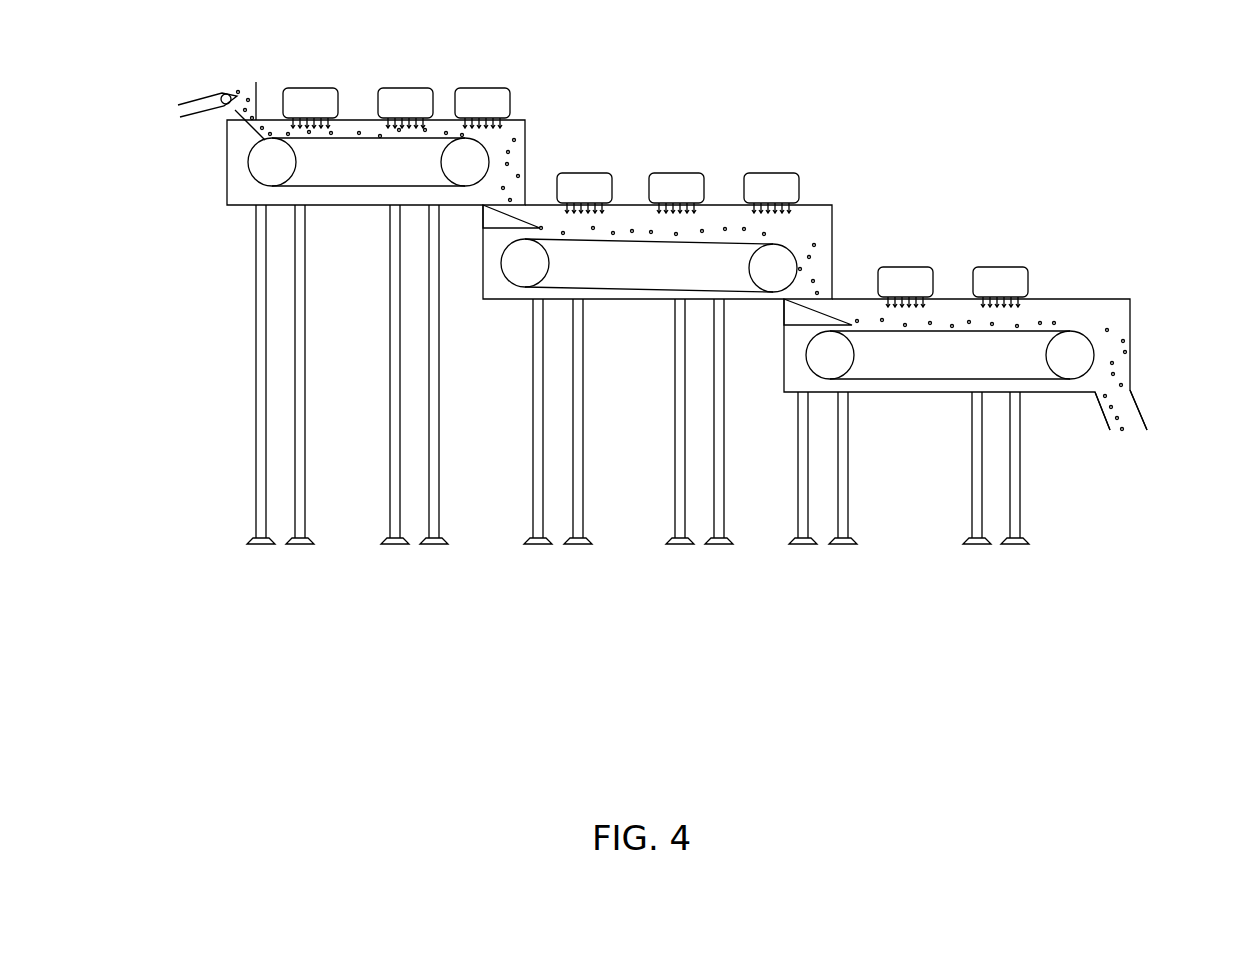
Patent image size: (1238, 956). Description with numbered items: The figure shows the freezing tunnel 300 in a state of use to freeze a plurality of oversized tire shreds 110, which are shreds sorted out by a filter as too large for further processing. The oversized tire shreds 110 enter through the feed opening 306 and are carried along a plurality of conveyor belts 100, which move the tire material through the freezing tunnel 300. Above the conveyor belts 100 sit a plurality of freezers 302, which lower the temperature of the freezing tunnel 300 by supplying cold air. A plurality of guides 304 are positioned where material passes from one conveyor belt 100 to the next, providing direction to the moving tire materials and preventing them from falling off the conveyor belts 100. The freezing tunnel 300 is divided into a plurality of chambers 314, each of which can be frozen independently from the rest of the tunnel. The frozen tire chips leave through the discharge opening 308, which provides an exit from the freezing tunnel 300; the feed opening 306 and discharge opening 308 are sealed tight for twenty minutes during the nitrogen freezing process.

The freezing tunnel 300 is at (695, 626).
The conveyor belts 100 is at (340, 187).
The freezers 302 is at (317, 88).
The chambers 314 is at (350, 113).
The guides 304 is at (482, 215).
The feed opening 306 is at (242, 76).
The discharge opening 308 is at (1152, 442).
The oversized tire shreds 110 is at (178, 104).